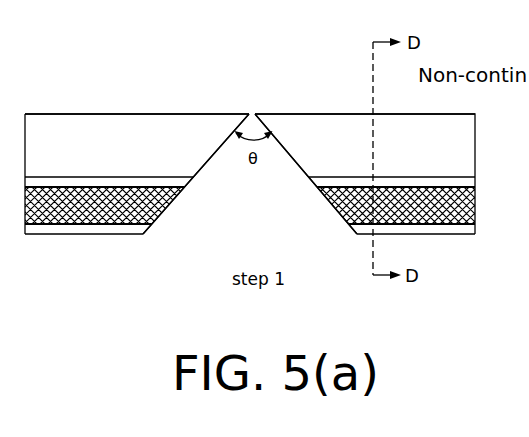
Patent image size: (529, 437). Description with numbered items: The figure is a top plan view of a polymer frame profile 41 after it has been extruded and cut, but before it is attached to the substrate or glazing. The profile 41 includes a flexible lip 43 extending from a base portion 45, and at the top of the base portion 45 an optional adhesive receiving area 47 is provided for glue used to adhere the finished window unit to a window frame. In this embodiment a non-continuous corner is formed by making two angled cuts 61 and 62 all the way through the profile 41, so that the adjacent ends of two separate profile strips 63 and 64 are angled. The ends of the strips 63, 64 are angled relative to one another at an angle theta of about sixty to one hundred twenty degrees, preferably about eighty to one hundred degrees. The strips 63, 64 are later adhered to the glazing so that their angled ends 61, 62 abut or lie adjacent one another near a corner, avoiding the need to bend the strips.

The polymer frame profile 41 is at (245, 104).
The flexible lip 43 is at (112, 125).
The base portion 45 is at (476, 200).
The adhesive receiving area 47 is at (430, 218).
The angled cut 61 is at (213, 157).
The angled cut 62 is at (292, 163).
The profile strip 63 is at (165, 126).
The profile strip 64 is at (303, 120).